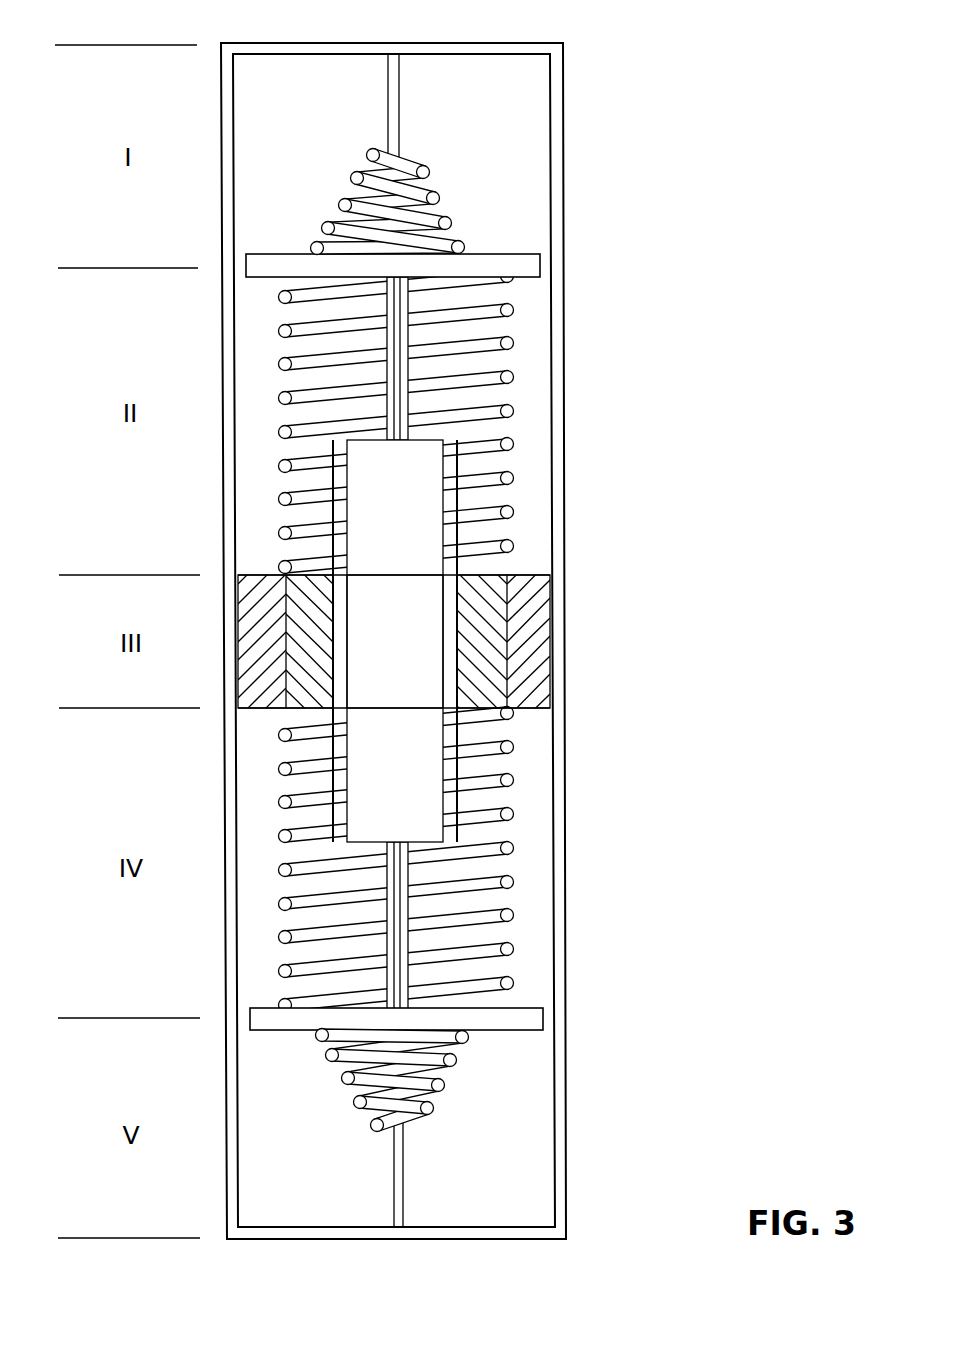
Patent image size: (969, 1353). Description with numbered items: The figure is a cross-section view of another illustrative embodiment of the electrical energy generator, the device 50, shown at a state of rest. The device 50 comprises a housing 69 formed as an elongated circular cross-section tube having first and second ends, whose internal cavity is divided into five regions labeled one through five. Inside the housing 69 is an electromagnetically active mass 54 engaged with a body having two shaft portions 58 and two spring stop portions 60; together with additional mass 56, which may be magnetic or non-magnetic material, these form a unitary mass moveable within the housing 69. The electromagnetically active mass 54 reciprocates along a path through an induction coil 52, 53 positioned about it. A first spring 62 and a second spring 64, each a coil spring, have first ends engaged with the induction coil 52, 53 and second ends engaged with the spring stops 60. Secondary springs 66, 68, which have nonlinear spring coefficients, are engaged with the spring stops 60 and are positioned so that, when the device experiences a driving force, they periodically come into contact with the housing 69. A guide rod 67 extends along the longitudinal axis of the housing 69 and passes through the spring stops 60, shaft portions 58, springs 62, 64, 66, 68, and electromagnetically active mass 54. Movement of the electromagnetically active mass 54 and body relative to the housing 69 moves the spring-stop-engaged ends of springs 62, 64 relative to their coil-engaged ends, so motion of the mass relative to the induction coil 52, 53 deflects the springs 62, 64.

The device 50 is at (632, 43).
The induction coil 52 is at (505, 567).
The induction coil 53 is at (527, 680).
The electromagnetically active mass 54 is at (405, 642).
The additional mass 56 is at (405, 483).
The shaft portion 58 is at (398, 368).
The spring stop portion 60 is at (525, 262).
The first spring 62 is at (483, 311).
The second spring 64 is at (487, 958).
The secondary spring 66 is at (405, 200).
The guide rod 67 is at (399, 105).
The secondary spring 68 is at (432, 1083).
The housing 69 is at (528, 1232).